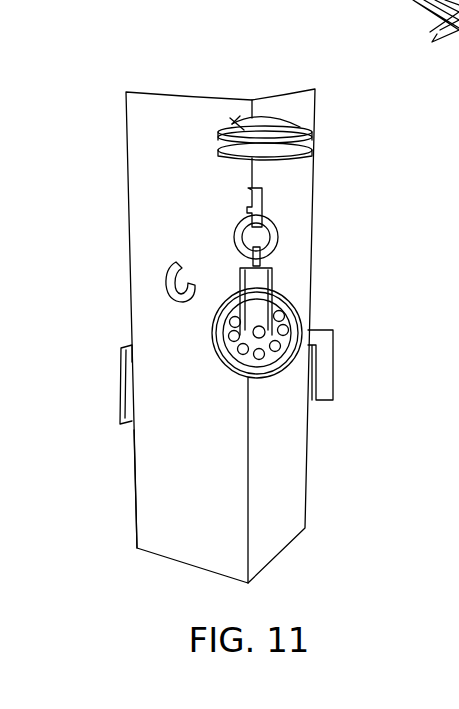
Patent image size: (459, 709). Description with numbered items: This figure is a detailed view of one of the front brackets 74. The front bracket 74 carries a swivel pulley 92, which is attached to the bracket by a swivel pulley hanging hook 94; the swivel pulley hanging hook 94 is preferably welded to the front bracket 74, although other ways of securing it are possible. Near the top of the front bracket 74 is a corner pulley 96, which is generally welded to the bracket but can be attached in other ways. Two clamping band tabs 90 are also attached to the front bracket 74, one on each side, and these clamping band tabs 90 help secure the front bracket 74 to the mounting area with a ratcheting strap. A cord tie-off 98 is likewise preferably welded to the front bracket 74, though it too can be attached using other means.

The front bracket 74 is at (202, 107).
The corner pulley 96 is at (300, 125).
The swivel pulley hanging hook 94 is at (262, 205).
The swivel pulley 92 is at (268, 304).
The cord tie-off 98 is at (168, 270).
The clamping band tabs 90 is at (117, 372).